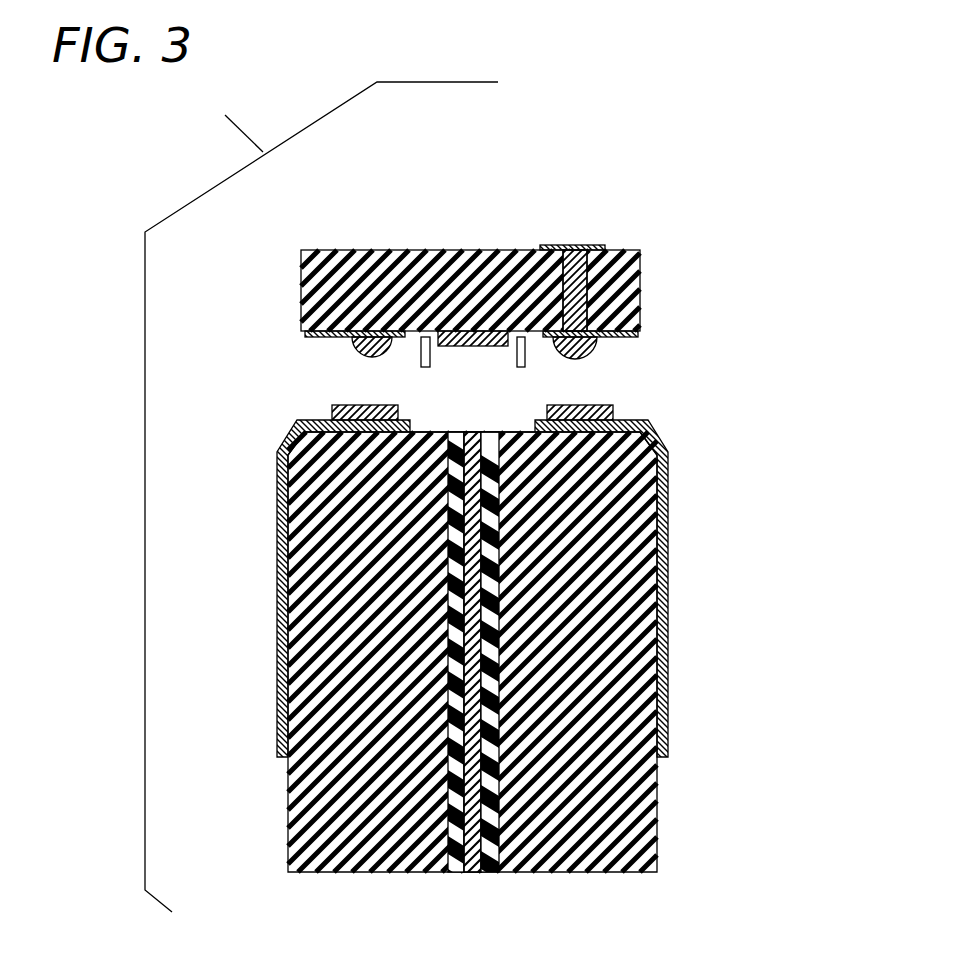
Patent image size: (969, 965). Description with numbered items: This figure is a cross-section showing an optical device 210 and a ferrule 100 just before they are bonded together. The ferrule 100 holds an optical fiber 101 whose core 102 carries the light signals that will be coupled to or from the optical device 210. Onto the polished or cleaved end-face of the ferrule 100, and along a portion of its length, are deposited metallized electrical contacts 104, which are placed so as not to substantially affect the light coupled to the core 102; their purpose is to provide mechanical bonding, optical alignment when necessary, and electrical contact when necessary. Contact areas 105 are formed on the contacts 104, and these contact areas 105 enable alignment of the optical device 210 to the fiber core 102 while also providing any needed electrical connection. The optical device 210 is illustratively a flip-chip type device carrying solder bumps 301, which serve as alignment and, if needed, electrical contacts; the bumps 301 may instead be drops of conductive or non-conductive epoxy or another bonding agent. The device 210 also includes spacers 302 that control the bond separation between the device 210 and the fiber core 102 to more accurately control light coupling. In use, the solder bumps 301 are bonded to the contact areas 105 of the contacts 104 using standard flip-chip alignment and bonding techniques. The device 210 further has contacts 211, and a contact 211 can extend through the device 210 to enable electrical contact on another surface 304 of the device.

The ferrule 100 is at (657, 845).
The optical fiber 101 is at (492, 872).
The core 102 is at (468, 872).
The metallized electrical contacts 104 is at (668, 690).
The contact areas 105 is at (620, 437).
The optical device 210 is at (460, 250).
The contacts 211 is at (617, 338).
The solder bumps 301 is at (350, 340).
The spacers 302 is at (424, 368).
The another surface of device 304 is at (592, 247).